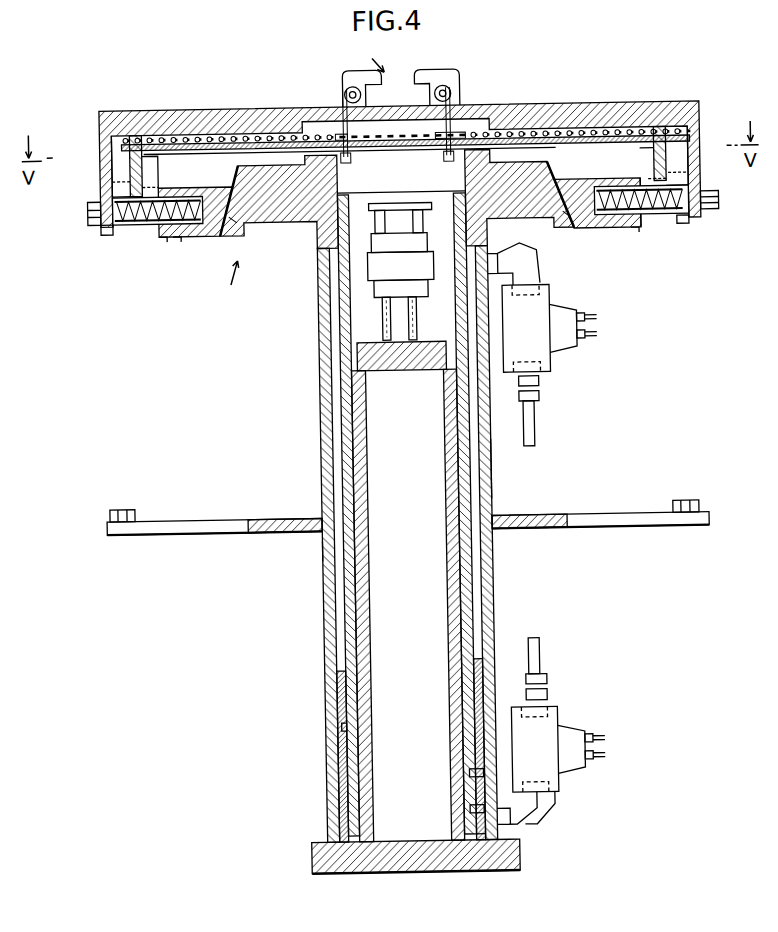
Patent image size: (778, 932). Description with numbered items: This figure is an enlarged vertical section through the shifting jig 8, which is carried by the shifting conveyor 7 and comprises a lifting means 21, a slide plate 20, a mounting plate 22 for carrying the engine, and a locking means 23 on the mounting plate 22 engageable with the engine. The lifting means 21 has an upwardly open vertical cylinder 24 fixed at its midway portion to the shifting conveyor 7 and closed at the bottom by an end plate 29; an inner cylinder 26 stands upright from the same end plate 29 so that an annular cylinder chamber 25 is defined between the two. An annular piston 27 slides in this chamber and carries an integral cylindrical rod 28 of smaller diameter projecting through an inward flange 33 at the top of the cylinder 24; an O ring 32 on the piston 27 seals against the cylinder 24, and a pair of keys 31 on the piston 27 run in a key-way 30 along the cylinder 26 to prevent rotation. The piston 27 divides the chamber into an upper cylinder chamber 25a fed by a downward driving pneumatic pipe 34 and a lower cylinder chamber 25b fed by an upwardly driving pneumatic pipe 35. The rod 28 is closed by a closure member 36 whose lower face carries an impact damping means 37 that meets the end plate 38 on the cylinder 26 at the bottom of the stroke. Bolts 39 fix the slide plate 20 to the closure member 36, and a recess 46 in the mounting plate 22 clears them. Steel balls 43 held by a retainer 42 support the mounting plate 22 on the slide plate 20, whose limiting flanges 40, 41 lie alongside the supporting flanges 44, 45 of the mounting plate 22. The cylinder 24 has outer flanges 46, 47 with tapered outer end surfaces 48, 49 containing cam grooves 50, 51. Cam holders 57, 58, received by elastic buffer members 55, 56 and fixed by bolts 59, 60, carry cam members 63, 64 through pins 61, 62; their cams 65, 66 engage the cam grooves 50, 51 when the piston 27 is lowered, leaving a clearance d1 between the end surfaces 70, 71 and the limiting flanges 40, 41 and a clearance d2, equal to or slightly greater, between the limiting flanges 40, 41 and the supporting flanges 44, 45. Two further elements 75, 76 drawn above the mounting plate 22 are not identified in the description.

The shifting conveyor 7 is at (218, 517).
The shifting jig 8 is at (229, 286).
The slide plate 20 is at (250, 141).
The lifting means 21 is at (320, 597).
The mounting plate 22 is at (520, 112).
The locking means 23 is at (378, 52).
The cylinder 24 is at (322, 552).
The annular cylinder chamber 25 is at (488, 552).
The upper cylinder chamber 25a is at (488, 480).
The lower cylinder chamber 25b is at (492, 850).
The cylinder 26 is at (367, 606).
The annular piston 27 is at (336, 766).
The cylindrical rod 28 is at (342, 400).
The end plate 29 is at (350, 872).
The key-way 30 is at (470, 726).
The keys 31 is at (463, 809).
The O ring 32 is at (336, 726).
The inward flange 33 is at (431, 231).
The downward driving pneumatic pipe 34 is at (536, 426).
The upwardly driving pneumatic pipe 35 is at (536, 648).
The closure member 36 is at (462, 181).
The impact damping means 37 is at (378, 323).
The end plate 38 is at (402, 360).
The bolts 39 is at (347, 104).
The limiting flange 40 is at (112, 150).
The limiting flange 41 is at (694, 142).
The retainer 42 is at (190, 134).
The steel balls 43 is at (215, 134).
The supporting flange 44 is at (116, 190).
The supporting flange 45 is at (694, 180).
The outer flange 46 is at (285, 221).
The outer flange 47 is at (518, 221).
The outer end surface 48 is at (240, 172).
The outer end surface 49 is at (558, 176).
The cam groove 50 is at (206, 235).
The cam groove 51 is at (576, 192).
The buffer member 55 is at (140, 222).
The buffer member 56 is at (662, 220).
The cam holder 57 is at (108, 231).
The cam holder 58 is at (688, 229).
The bolt 59 is at (91, 210).
The bolt 60 is at (722, 205).
The pin 61 is at (180, 236).
The pin 62 is at (640, 183).
The cam member 63 is at (195, 184).
The cam member 64 is at (600, 233).
The cam 65 is at (238, 212).
The cam 66 is at (566, 212).
The end surface 70 is at (166, 236).
The end surface 71 is at (645, 235).
The roller 75 is at (349, 76).
The roller 76 is at (452, 62).
The clearance d1 is at (656, 182).
The clearance d2 is at (116, 177).